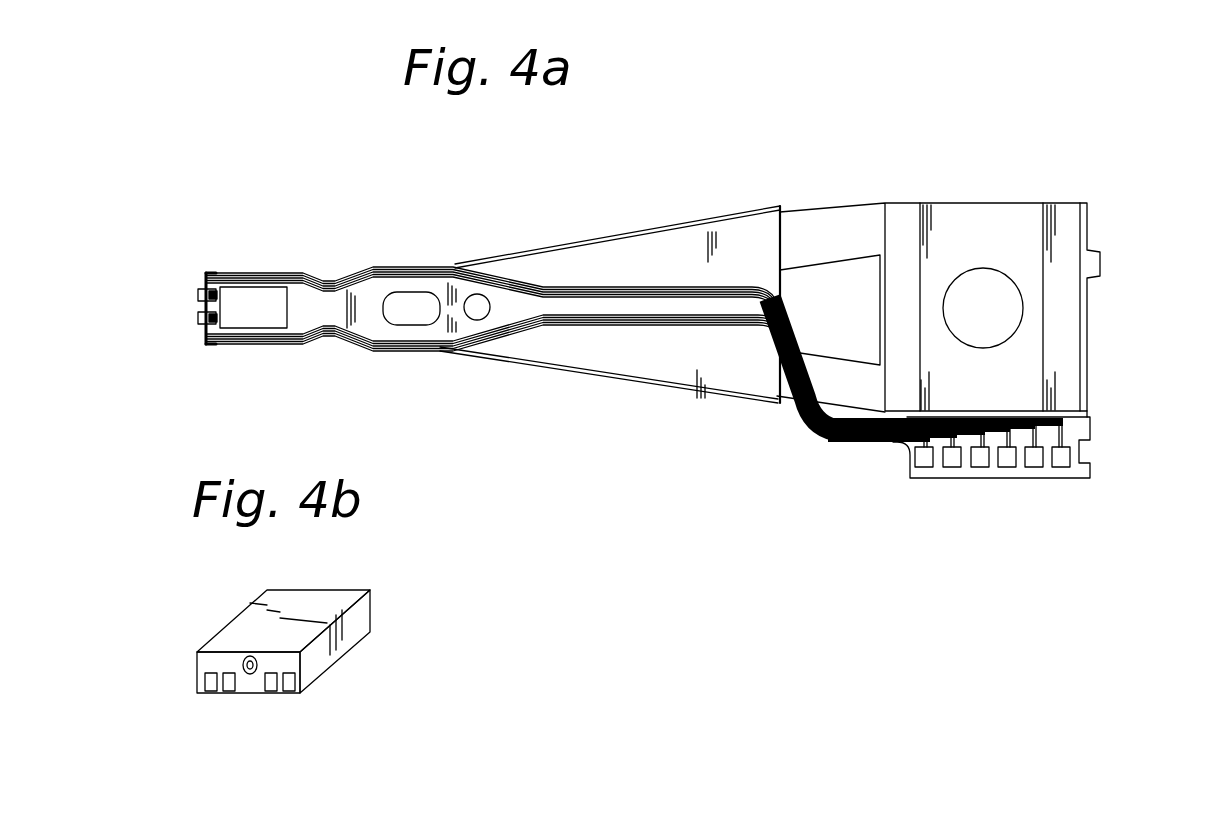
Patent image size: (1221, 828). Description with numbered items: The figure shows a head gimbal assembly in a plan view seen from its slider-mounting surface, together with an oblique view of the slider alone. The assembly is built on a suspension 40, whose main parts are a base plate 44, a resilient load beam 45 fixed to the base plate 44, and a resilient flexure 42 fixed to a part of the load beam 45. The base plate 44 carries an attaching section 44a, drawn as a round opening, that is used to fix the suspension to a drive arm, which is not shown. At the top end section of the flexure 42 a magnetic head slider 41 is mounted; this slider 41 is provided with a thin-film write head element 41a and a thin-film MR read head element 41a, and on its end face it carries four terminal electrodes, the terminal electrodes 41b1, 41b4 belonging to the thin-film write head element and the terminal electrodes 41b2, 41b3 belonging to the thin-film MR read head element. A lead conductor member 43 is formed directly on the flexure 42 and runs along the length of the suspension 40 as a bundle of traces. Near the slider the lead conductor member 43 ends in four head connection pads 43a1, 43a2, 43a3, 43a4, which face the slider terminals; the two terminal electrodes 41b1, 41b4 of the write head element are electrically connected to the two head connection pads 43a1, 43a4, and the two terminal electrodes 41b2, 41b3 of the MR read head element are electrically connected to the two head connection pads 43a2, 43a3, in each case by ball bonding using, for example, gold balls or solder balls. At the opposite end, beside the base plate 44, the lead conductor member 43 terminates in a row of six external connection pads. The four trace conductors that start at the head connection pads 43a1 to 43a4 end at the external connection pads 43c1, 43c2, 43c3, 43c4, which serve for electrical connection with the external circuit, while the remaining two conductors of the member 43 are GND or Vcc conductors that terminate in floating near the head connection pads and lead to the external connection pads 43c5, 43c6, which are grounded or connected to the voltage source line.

In FIG. 4a, the suspension 40 is at (888, 150).
In FIG. 4a, the magnetic head slider 41 is at (262, 318).
In FIG. 4b, the magnetic head slider 41 is at (335, 598).
In FIG. 4b, the thin-film write head element and thin-film MR read head element 41a is at (247, 672).
In FIG. 4b, the terminal electrode 41b1 is at (225, 688).
In FIG. 4b, the terminal electrode 41b2 is at (203, 685).
In FIG. 4b, the terminal electrode 41b3 is at (298, 685).
In FIG. 4b, the terminal electrode 41b4 is at (270, 686).
In FIG. 4a, the flexure 42 is at (362, 325).
In FIG. 4a, the lead conductor member 43 is at (577, 322).
In FIG. 4a, the head connection pad 43a1 is at (200, 296).
In FIG. 4a, the head connection pad 43a2 is at (205, 275).
In FIG. 4a, the head connection pad 43a3 is at (205, 345).
In FIG. 4a, the head connection pad 43a4 is at (200, 320).
In FIG. 4a, the external connection pad 43c1 is at (1064, 460).
In FIG. 4a, the external connection pad 43c2 is at (1008, 460).
In FIG. 4a, the external connection pad 43c3 is at (982, 460).
In FIG. 4a, the external connection pad 43c4 is at (926, 458).
In FIG. 4a, the external connection pad 43c5 is at (1036, 460).
In FIG. 4a, the external connection pad 43c6 is at (952, 460).
In FIG. 4a, the base plate 44 is at (1018, 226).
In FIG. 4a, the attaching section 44a is at (1016, 308).
In FIG. 4a, the load beam 45 is at (730, 252).